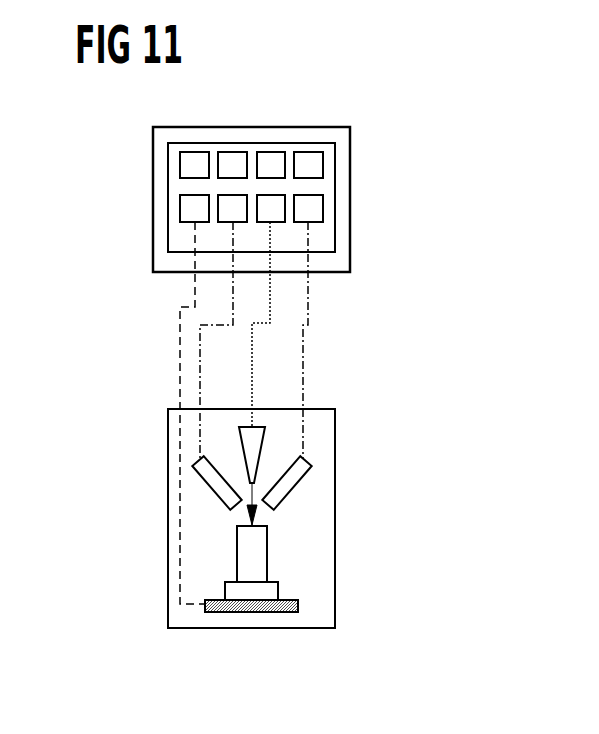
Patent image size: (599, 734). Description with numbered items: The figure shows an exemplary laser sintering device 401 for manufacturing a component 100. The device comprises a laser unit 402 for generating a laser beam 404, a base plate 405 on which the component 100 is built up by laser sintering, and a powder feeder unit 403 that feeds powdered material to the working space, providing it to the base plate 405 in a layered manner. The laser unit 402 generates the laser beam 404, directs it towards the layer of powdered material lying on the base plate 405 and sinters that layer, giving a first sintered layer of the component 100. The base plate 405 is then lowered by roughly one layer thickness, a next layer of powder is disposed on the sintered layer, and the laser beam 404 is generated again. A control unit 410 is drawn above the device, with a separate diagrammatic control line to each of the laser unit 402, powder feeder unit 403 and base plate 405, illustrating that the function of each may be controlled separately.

The laser sintering device 401 is at (377, 111).
The laser unit 402 is at (248, 127).
The powder feeder unit 403 is at (210, 492).
The laser beam 404 is at (256, 503).
The base plate 405 is at (298, 603).
The control unit 410 is at (350, 197).
The component 100 is at (237, 553).